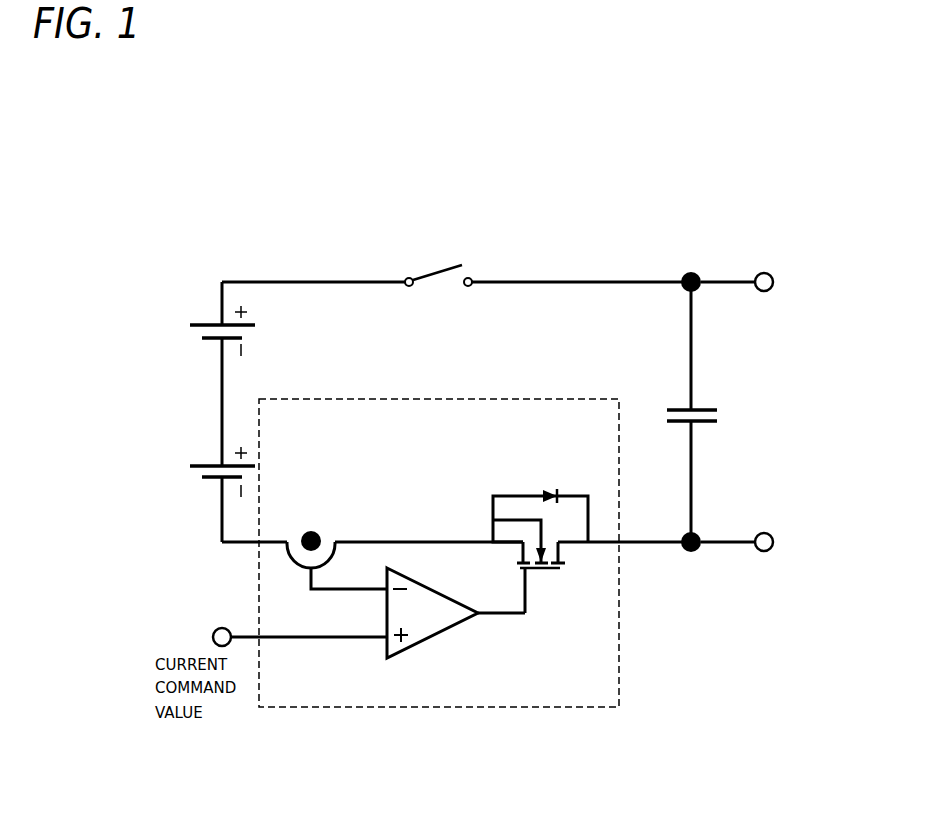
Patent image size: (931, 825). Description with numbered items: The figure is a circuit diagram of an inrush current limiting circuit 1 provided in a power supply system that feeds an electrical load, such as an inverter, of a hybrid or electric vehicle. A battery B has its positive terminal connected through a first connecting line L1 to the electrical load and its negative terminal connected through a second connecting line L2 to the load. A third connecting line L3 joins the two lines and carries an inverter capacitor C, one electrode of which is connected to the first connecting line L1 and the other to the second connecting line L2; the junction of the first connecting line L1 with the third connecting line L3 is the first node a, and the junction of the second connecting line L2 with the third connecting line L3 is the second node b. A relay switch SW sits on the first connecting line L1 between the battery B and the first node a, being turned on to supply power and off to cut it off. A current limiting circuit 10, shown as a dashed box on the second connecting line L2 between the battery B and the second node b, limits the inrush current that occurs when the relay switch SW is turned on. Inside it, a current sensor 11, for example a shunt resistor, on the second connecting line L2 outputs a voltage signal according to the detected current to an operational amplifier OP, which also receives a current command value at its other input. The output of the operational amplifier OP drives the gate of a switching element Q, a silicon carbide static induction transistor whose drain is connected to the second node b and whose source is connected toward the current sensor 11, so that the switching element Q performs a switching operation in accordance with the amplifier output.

The inrush current limiting circuit 1 is at (740, 250).
The current limiting circuit 10 is at (620, 687).
The current sensor 11 is at (326, 521).
The battery B is at (170, 405).
The relay switch SW is at (424, 251).
The first connecting line L1 is at (595, 282).
The second connecting line L2 is at (653, 542).
The third connecting line L3 is at (691, 355).
The inverter capacitor C is at (708, 472).
The switching element Q is at (540, 537).
The operational amplifier OP is at (442, 635).
The first node a is at (690, 272).
The second node b is at (691, 552).